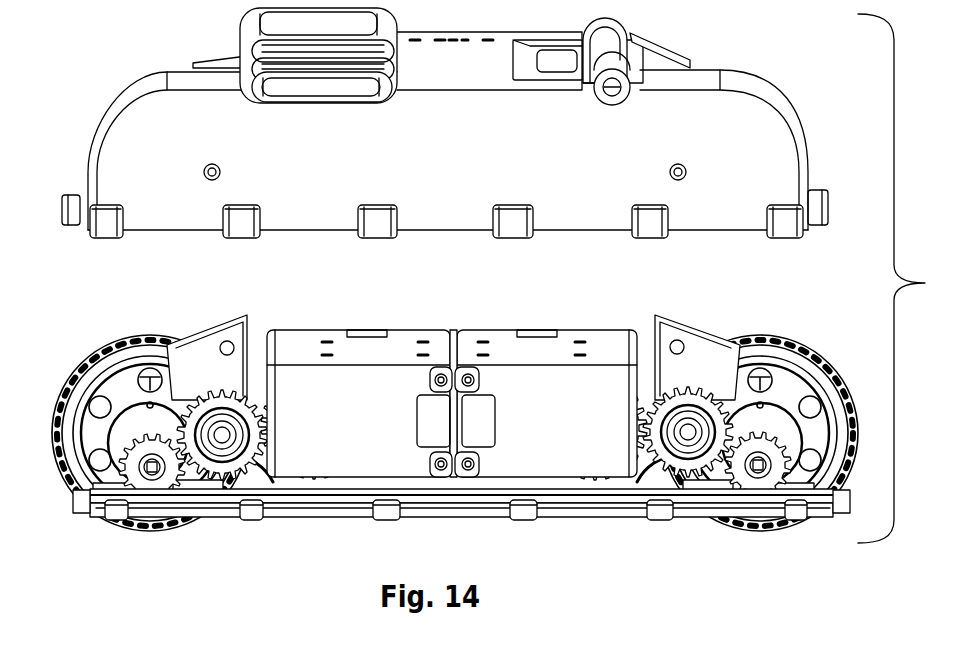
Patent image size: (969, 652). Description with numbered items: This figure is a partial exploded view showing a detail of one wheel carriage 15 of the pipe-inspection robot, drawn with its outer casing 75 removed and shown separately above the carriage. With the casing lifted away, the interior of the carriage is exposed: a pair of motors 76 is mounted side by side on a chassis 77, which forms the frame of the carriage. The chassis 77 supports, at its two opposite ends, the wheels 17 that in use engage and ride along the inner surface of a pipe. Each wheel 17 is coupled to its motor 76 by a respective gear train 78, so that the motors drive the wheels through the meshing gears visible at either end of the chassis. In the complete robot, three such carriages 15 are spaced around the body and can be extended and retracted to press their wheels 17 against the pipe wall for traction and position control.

The wheel carriage 15 is at (455, 473).
The wheels 17 is at (137, 532).
The outer casing 75 is at (457, 166).
The motors 76 is at (403, 435).
The chassis 77 is at (656, 556).
The gear trains 78 is at (322, 478).